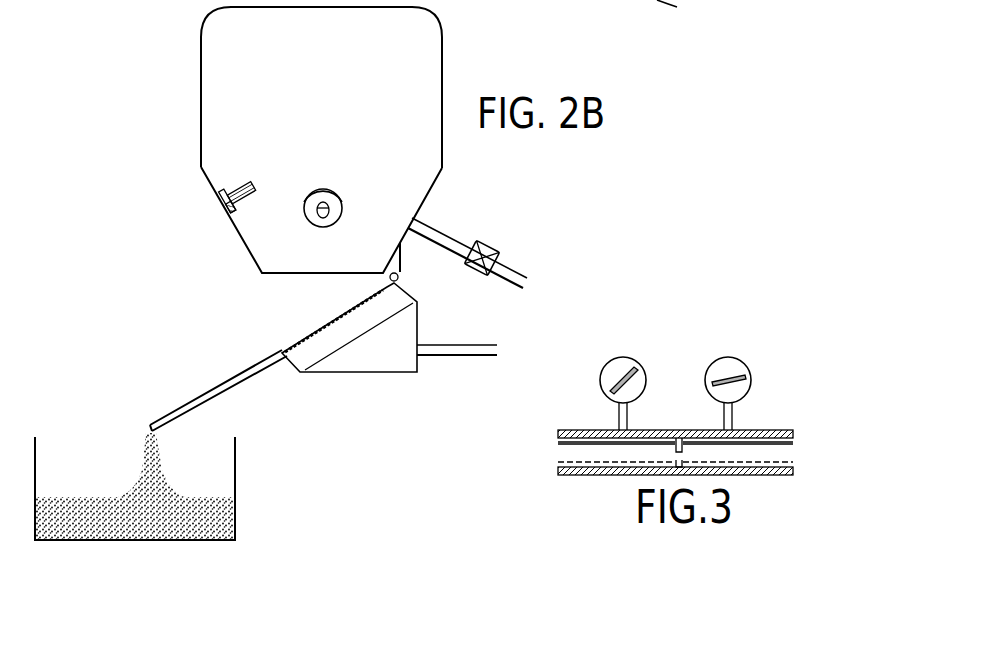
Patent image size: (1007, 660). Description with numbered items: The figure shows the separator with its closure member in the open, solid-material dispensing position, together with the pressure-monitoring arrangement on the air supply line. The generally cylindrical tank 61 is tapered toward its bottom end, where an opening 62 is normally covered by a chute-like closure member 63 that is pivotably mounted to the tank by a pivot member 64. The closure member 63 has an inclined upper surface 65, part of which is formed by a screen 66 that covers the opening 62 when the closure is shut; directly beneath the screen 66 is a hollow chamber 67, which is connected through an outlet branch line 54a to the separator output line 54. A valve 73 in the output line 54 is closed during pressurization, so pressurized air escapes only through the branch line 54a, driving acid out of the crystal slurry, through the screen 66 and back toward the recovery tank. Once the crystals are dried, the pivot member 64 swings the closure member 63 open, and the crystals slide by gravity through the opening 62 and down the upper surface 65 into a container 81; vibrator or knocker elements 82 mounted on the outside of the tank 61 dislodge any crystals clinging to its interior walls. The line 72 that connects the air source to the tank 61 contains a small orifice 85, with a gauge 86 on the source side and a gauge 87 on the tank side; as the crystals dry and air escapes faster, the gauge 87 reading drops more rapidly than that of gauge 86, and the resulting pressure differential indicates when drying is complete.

In FIG. 2B, the tank 61 is at (201, 87).
In FIG. 2B, the vibrator or knocker elements 82 is at (327, 185).
In FIG. 2B, the opening 62 is at (280, 275).
In FIG. 2B, the separator output line 54 is at (445, 235).
In FIG. 2B, the valve 73 is at (490, 248).
In FIG. 2B, the pivot member 64 is at (410, 270).
In FIG. 2B, the chamber 67 is at (382, 360).
In FIG. 2B, the screen 66 is at (312, 332).
In FIG. 2B, the closure member 63 is at (294, 378).
In FIG. 2B, the upper surface 65 is at (207, 392).
In FIG. 2B, the outlet branch line 54a is at (460, 348).
In FIG. 2B, the container 81 is at (235, 488).
In FIG. 3, the line 72 is at (595, 430).
In FIG. 3, the orifice 85 is at (694, 453).
In FIG. 3, the gauge 86 is at (727, 357).
In FIG. 3, the gauge 87 is at (623, 357).